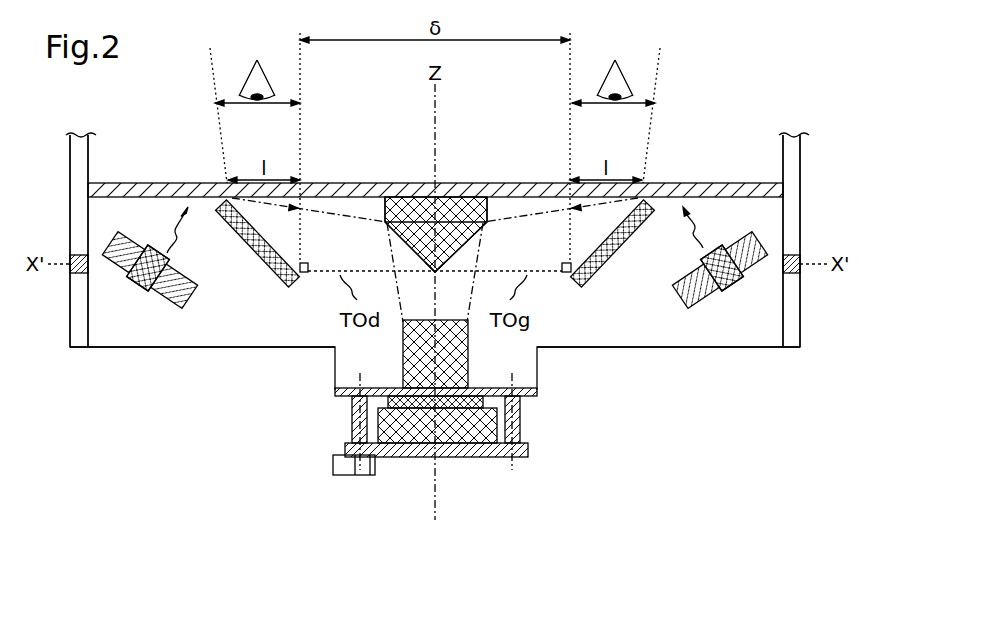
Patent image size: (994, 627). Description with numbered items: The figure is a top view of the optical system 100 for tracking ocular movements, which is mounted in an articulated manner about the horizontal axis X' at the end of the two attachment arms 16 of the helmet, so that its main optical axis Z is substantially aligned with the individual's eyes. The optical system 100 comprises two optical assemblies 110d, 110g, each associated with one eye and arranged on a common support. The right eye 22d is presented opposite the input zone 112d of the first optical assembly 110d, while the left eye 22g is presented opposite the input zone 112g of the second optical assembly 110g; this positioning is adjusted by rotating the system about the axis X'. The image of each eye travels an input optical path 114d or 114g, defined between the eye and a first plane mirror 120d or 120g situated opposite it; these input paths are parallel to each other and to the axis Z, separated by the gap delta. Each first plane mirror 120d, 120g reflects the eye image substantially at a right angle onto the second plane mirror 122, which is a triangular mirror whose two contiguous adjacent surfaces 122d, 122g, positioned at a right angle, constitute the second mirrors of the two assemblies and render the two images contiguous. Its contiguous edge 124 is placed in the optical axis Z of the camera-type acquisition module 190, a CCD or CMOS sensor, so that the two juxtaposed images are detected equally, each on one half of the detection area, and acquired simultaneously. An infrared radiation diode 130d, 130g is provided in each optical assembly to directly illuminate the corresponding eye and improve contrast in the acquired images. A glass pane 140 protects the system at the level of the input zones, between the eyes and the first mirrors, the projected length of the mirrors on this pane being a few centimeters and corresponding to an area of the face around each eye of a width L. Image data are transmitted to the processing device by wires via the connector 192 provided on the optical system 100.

The attachment arm 16 is at (87, 160).
The right eye 22d is at (247, 85).
The left eye 22g is at (623, 85).
The optical system 100 is at (122, 491).
The first optical assembly 110d is at (214, 372).
The second optical assembly 110g is at (656, 372).
The input zone 112d is at (300, 206).
The input zone 112g is at (570, 206).
The input optical path 114d is at (300, 88).
The input optical path 114g is at (570, 88).
The first plane mirror 120d is at (258, 262).
The first plane mirror 120g is at (614, 262).
The second plane mirror 122 is at (432, 194).
The second mirror surface 122d is at (382, 197).
The second mirror surface 122g is at (465, 197).
The contiguous edge 124 is at (447, 284).
The infrared radiation diode 130d is at (160, 292).
The infrared radiation diode 130g is at (710, 292).
The glass pane 140 is at (672, 183).
The acquisition module 190 is at (453, 456).
The connector 192 is at (330, 463).